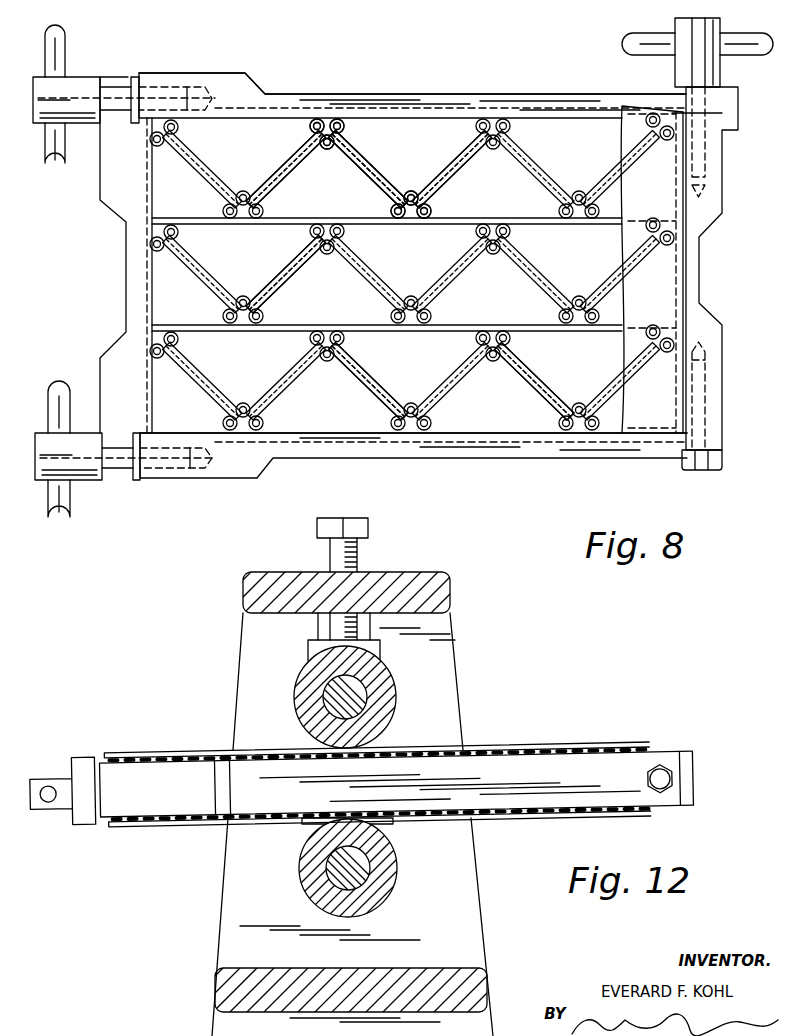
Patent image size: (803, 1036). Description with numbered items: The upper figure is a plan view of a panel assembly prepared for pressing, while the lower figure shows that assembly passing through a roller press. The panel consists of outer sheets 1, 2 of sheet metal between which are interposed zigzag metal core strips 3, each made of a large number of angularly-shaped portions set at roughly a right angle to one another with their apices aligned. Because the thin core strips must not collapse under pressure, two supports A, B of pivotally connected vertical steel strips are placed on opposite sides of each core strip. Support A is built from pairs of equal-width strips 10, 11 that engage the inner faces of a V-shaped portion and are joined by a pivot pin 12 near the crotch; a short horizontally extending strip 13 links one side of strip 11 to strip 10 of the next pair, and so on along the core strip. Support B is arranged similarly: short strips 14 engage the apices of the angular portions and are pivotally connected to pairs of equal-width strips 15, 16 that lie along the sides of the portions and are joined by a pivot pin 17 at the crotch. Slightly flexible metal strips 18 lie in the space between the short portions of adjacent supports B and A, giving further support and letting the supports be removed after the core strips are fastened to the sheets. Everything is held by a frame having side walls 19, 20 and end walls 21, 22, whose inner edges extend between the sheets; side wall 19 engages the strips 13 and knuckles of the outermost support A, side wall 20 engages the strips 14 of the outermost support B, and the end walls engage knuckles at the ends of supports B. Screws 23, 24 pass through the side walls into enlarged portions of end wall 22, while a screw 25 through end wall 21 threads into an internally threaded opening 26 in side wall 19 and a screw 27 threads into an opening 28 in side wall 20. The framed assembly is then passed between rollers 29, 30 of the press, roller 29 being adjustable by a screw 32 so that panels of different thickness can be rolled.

In FIG. 8, the outer sheet 1 is at (632, 107).
In FIG. 12, the outer sheet 1 is at (606, 746).
In FIG. 8, the outer sheet 2 is at (551, 422).
In FIG. 12, the outer sheet 2 is at (569, 810).
In FIG. 8, the metal core strip 3 is at (371, 378).
In FIG. 8, the strip of support A 10 is at (370, 165).
In FIG. 8, the strip of support A 11 is at (457, 165).
In FIG. 8, the pivot pin 12 is at (411, 190).
In FIG. 8, the short strip 13 is at (327, 120).
In FIG. 8, the short strip 14 is at (405, 220).
In FIG. 8, the strip of support B 15 is at (375, 180).
In FIG. 8, the strip of support B 16 is at (282, 178).
In FIG. 8, the pivot pin 17 is at (328, 150).
In FIG. 8, the strip 18 is at (435, 225).
In FIG. 8, the side wall 19 is at (420, 94).
In FIG. 8, the side wall 20 is at (435, 458).
In FIG. 12, the side wall 20 is at (492, 763).
In FIG. 8, the end wall 21 is at (100, 186).
In FIG. 8, the end wall 22 is at (724, 192).
In FIG. 8, the screw 23 is at (705, 152).
In FIG. 8, the screw 24 is at (705, 406).
In FIG. 12, the screw 24 is at (662, 769).
In FIG. 8, the screw 25 is at (134, 80).
In FIG. 8, the internally threaded opening 26 is at (190, 95).
In FIG. 8, the screw 27 is at (137, 468).
In FIG. 8, the internally threaded opening 28 is at (197, 472).
In FIG. 12, the roller 29 is at (392, 688).
In FIG. 12, the roller 30 is at (398, 866).
In FIG. 12, the screw 32 is at (357, 560).
In FIG. 8, the support A is at (224, 157).
In FIG. 8, the support B is at (308, 168).